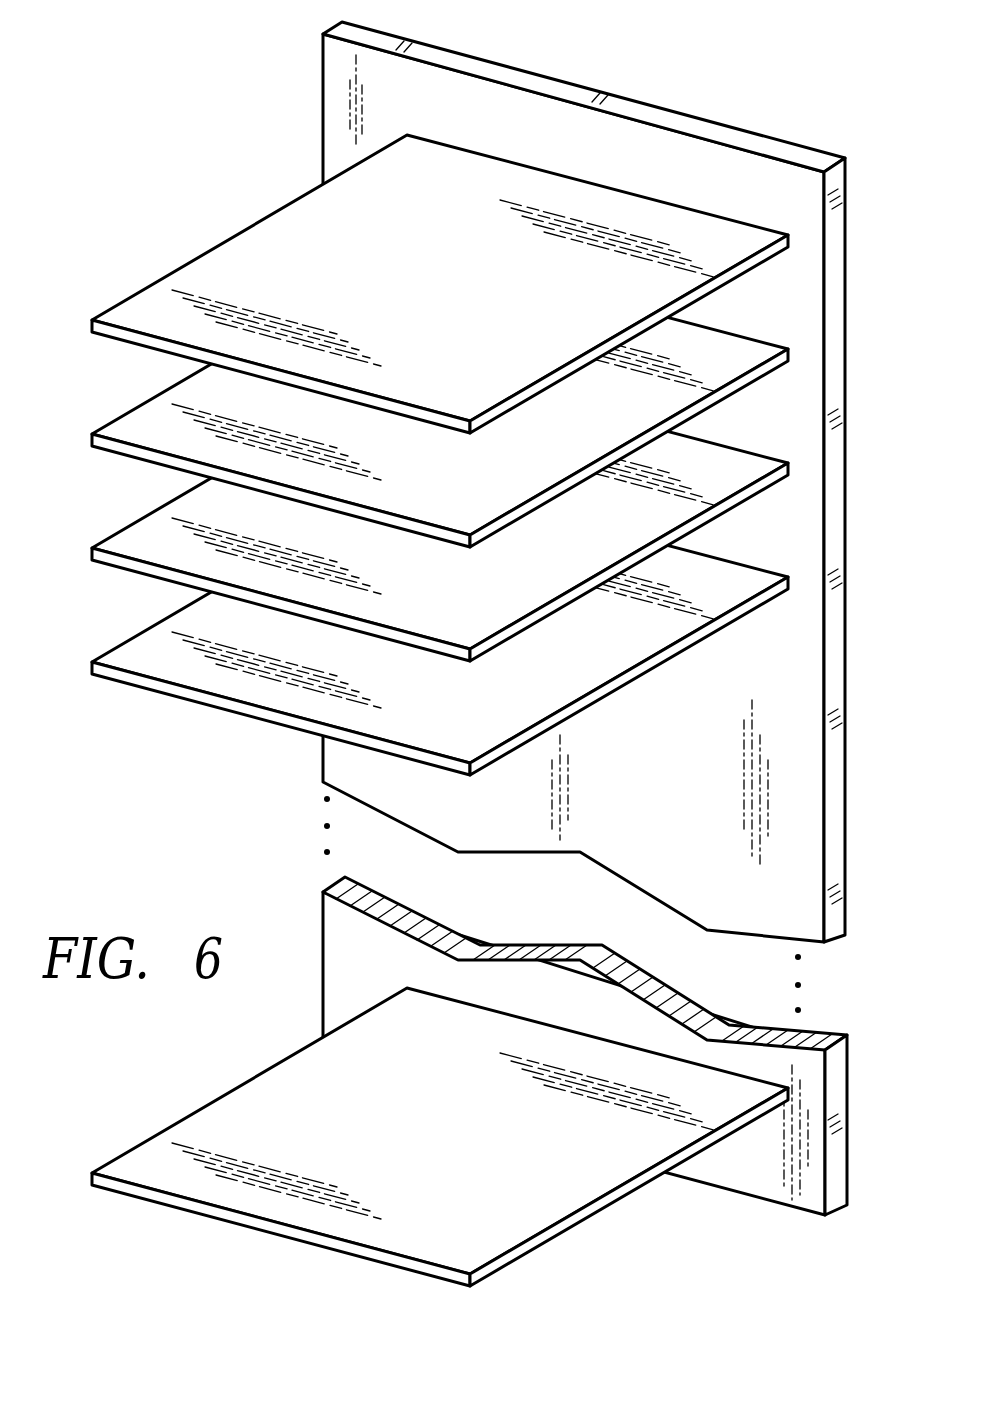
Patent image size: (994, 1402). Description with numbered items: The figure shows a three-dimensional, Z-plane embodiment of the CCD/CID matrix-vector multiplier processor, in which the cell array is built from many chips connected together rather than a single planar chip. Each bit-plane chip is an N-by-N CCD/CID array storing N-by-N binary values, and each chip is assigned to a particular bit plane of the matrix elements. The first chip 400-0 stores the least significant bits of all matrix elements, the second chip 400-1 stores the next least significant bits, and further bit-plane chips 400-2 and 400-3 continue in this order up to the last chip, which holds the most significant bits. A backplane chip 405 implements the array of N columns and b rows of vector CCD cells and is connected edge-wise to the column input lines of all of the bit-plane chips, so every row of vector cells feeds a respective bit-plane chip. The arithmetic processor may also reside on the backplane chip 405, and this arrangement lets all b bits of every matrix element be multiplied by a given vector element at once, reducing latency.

The backplane chip 405 is at (809, 150).
The first chip 400-0 is at (495, 379).
The second chip 400-1 is at (495, 499).
The bit-plane chip 400-2 is at (495, 612).
The bit-plane chip 400-3 is at (495, 725).